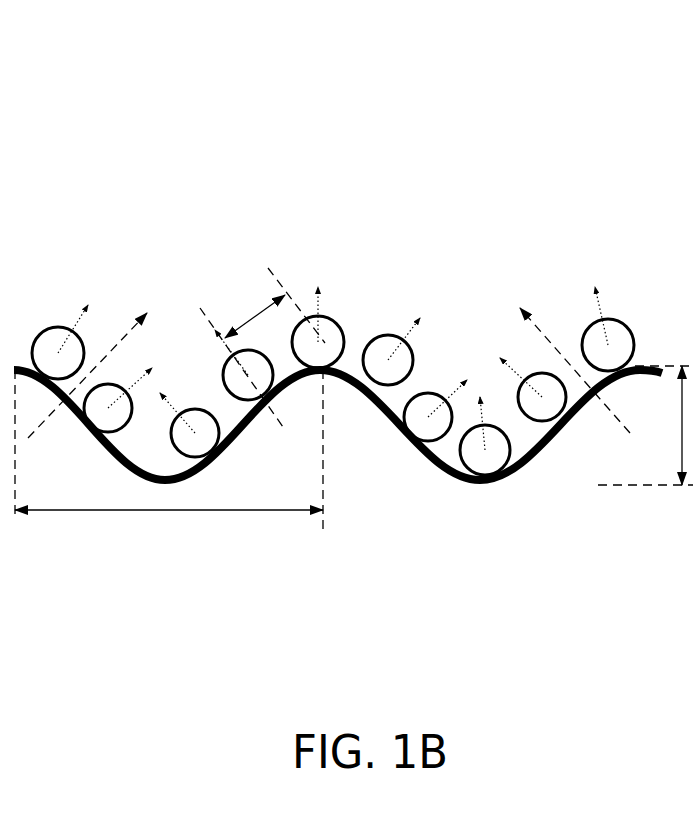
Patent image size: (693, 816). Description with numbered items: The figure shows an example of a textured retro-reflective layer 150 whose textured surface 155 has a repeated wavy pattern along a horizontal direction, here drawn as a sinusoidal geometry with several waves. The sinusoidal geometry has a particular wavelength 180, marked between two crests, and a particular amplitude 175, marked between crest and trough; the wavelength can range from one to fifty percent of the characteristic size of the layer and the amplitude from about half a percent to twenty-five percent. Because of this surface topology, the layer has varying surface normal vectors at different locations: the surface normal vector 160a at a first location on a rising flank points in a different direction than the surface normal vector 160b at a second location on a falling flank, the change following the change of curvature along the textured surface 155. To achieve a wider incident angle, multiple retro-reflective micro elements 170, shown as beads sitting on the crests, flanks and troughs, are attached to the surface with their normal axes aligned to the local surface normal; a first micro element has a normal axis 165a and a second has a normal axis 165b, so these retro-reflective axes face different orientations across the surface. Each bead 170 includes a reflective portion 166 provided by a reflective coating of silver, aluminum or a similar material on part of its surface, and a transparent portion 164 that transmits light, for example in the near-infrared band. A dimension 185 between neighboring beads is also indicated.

The textured retro-reflective layer 150 is at (256, 114).
The textured surface 155 is at (535, 458).
The surface normal vector 160a is at (120, 340).
The surface normal vector 160b is at (562, 343).
The transparent portion 164 is at (478, 443).
The normal axis 165a is at (323, 308).
The normal axis 165b is at (457, 395).
The reflective coating portion 166 is at (489, 470).
The retro-reflective micro element 170 is at (362, 633).
The amplitude 175 is at (680, 430).
The wavelength 180 is at (178, 512).
The particle spacing 185 is at (255, 318).